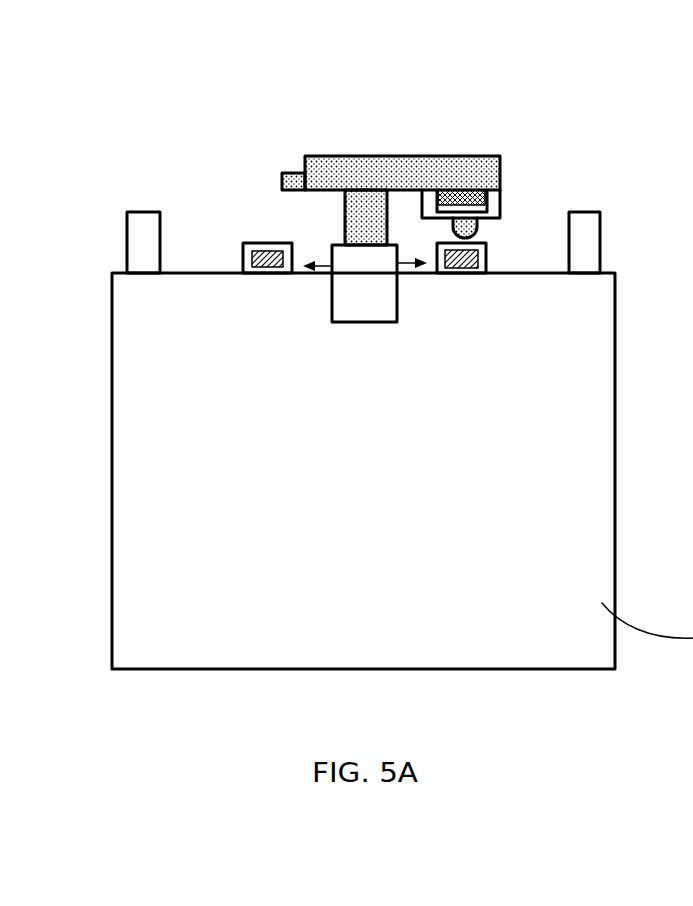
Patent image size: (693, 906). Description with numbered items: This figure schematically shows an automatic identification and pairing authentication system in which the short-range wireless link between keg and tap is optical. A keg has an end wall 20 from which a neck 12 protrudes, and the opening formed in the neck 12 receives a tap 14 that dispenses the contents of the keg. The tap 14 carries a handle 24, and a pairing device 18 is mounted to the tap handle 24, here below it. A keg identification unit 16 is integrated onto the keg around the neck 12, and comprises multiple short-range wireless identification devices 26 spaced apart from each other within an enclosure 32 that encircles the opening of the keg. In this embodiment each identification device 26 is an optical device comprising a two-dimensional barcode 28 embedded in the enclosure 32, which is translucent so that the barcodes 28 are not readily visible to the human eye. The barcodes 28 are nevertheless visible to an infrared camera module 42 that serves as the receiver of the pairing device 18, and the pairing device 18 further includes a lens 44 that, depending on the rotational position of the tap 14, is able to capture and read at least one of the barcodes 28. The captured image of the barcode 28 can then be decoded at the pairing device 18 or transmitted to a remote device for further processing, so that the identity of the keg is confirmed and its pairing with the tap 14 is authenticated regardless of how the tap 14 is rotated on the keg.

The neck 12 is at (292, 253).
The tap 14 is at (394, 217).
The keg identification unit 16 is at (398, 263).
The pairing device 18 is at (512, 145).
The end wall 20 is at (552, 274).
The handle 24 is at (387, 185).
The short-range wireless identification device 26 is at (258, 292).
The two-dimensional barcode 28 is at (285, 273).
The enclosure 32 is at (250, 242).
The infrared camera module 42 is at (479, 188).
The lens 44 is at (463, 226).